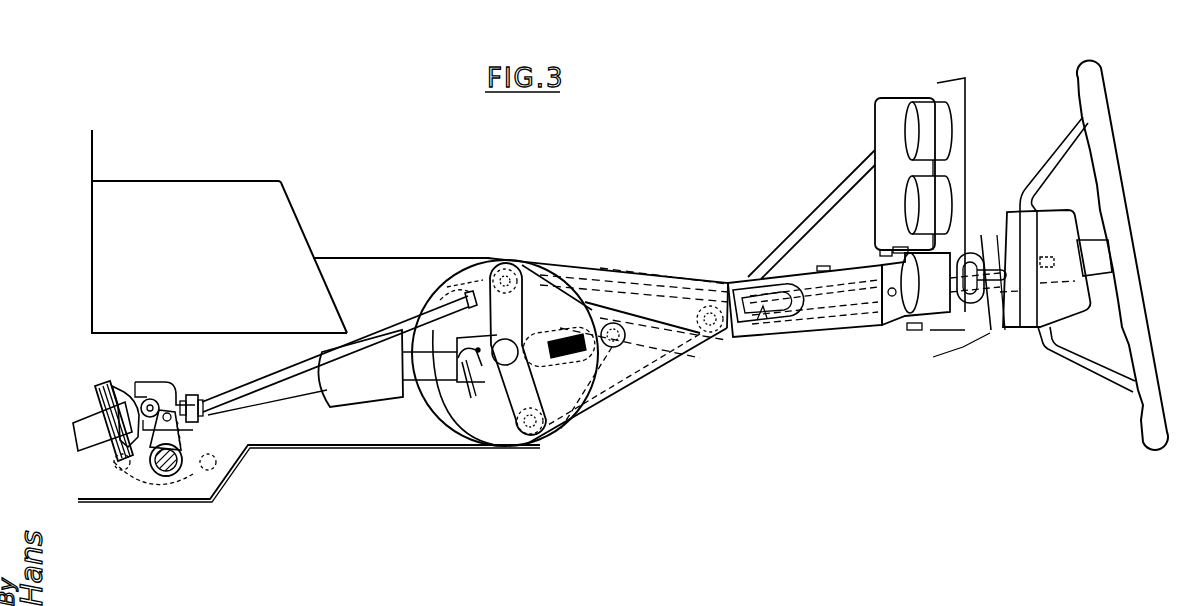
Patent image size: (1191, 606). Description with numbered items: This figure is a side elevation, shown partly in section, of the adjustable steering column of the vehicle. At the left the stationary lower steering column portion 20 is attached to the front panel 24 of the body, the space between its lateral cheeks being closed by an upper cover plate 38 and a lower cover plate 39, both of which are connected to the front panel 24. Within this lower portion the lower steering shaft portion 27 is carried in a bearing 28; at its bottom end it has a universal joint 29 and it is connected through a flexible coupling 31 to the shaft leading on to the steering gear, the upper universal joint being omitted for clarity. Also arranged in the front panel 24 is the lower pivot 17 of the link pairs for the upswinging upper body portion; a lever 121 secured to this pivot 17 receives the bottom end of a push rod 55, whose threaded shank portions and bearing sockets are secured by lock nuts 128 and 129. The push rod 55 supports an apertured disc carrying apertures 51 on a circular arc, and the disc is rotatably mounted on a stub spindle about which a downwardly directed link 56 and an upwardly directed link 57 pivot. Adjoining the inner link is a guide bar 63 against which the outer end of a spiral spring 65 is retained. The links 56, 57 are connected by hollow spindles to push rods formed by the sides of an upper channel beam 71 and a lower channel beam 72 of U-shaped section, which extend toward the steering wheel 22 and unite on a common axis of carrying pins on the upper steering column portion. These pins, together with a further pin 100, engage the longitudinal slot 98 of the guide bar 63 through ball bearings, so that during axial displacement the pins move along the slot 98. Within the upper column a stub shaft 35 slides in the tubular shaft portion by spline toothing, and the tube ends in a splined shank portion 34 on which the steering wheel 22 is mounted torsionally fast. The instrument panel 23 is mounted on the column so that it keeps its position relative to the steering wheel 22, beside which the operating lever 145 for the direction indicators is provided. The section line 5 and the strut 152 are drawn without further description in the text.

The front panel 24 is at (270, 200).
The upper cover plate 38 is at (432, 258).
The lower steering column portion 20 is at (380, 448).
The flexible coupling 31 is at (105, 388).
The universal joint 29 is at (150, 400).
The lock nut 128 is at (193, 403).
The lever 121 is at (170, 437).
The pivot 17 is at (175, 467).
The bearing 28 is at (353, 350).
The lower steering shaft portion 27 is at (300, 390).
The push rod 55 is at (392, 332).
The lock nut 129 is at (467, 290).
The lower cover plate 39 is at (447, 445).
The apertures 51 is at (503, 433).
The downwardly directed link 56 is at (505, 393).
The spiral spring 65 is at (460, 388).
The section line 5 is at (547, 246).
The upwardly directed link 57 is at (510, 313).
The stub shaft 35 is at (563, 340).
The upper channel beam 71 is at (650, 282).
The lower channel beam 72 is at (678, 370).
The pin 100 is at (615, 340).
The guide bar 63 is at (548, 366).
The longitudinal slot 98 is at (757, 313).
The instrument panel 23 is at (885, 112).
The strut 152 is at (832, 200).
The splined shank portion 34 is at (1018, 263).
The operating lever 145 is at (1002, 325).
The steering wheel 22 is at (1152, 412).